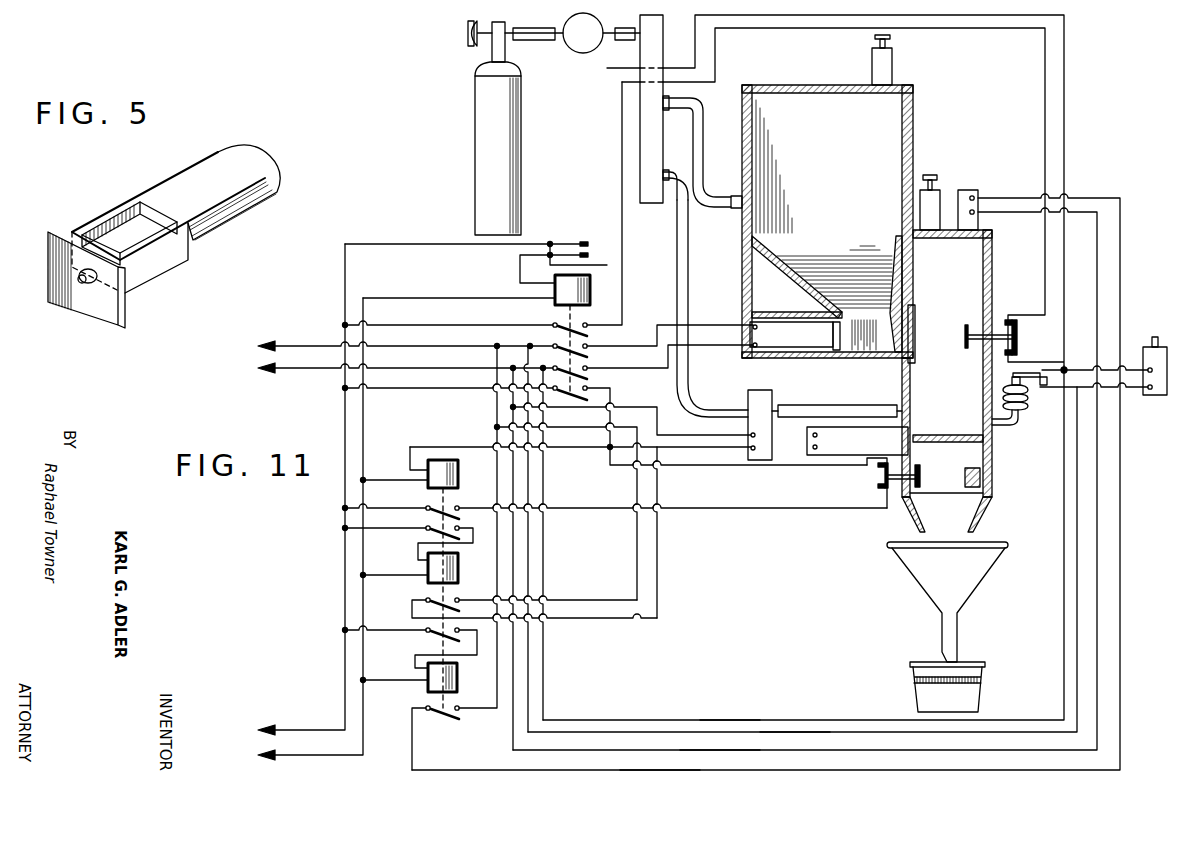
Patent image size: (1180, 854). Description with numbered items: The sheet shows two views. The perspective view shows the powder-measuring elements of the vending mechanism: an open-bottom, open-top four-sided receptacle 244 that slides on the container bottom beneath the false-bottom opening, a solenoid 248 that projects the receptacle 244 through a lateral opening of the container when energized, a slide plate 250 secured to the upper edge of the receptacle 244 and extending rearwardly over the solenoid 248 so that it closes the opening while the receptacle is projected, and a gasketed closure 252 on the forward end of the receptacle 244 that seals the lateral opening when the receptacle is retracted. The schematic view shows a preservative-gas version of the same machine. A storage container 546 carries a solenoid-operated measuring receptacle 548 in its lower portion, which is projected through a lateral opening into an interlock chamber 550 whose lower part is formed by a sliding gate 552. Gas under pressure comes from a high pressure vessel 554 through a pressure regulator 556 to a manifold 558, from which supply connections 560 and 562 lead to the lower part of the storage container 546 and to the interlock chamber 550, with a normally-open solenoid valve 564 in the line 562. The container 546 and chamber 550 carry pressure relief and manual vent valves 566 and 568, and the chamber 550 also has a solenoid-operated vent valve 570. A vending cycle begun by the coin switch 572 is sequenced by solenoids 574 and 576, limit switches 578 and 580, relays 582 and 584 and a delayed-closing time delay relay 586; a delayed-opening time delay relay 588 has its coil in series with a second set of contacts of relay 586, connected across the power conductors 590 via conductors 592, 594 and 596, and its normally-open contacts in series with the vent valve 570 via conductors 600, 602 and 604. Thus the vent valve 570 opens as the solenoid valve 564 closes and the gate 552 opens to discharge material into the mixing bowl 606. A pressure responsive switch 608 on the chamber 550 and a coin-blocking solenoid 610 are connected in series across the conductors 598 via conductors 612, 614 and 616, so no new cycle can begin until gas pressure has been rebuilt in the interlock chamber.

In FIG. 5, the receptacle 244 is at (167, 262).
In FIG. 5, the solenoid 248 is at (258, 160).
In FIG. 5, the slide plate 250 is at (185, 180).
In FIG. 5, the gasketed closure 252 is at (108, 315).
In FIG. 11, the storage container 546 is at (913, 140).
In FIG. 11, the measuring receptacle 548 is at (868, 344).
In FIG. 11, the interlock chamber 550 is at (992, 275).
In FIG. 11, the sliding gate 552 is at (930, 433).
In FIG. 11, the high pressure vessel 554 is at (523, 168).
In FIG. 11, the pressure regulator 556 is at (583, 54).
In FIG. 11, the manifold 558 is at (667, 140).
In FIG. 11, the supply connection 560 is at (700, 177).
In FIG. 11, the gas supply line 562 is at (690, 292).
In FIG. 11, the solenoid valve 564 is at (762, 393).
In FIG. 11, the pressure relief and manual vent valve 566 is at (892, 68).
In FIG. 11, the pressure relief and manual vent valve 568 is at (940, 195).
In FIG. 11, the solenoid-operated vent valve 570 is at (978, 193).
In FIG. 11, the coin switch 572 is at (572, 243).
In FIG. 11, the solenoid 574 is at (818, 343).
In FIG. 11, the solenoid 576 is at (835, 448).
In FIG. 11, the limit switch 578 is at (1018, 342).
In FIG. 11, the limit switch 580 is at (878, 477).
In FIG. 11, the relay 582 is at (590, 292).
In FIG. 11, the relay 584 is at (458, 480).
In FIG. 11, the time delay relay 586 is at (458, 573).
In FIG. 11, the time delay relay 588 is at (477, 676).
In FIG. 11, the power conductors 590 is at (258, 757).
In FIG. 11, the conductor 592 is at (370, 630).
In FIG. 11, the conductor 594 is at (413, 660).
In FIG. 11, the conductor 596 is at (387, 682).
In FIG. 11, the conductors 598 is at (258, 368).
In FIG. 11, the conductor 600 is at (713, 750).
In FIG. 11, the conductor 602 is at (660, 770).
In FIG. 11, the conductor 604 is at (496, 402).
In FIG. 11, the mixing bowl 606 is at (960, 605).
In FIG. 11, the pressure responsive switch 608 is at (1038, 390).
In FIG. 11, the coin-blocking solenoid 610 is at (1157, 396).
In FIG. 11, the conductor 612 is at (727, 720).
In FIG. 11, the conductor 614 is at (1064, 367).
In FIG. 11, the conductor 616 is at (792, 732).